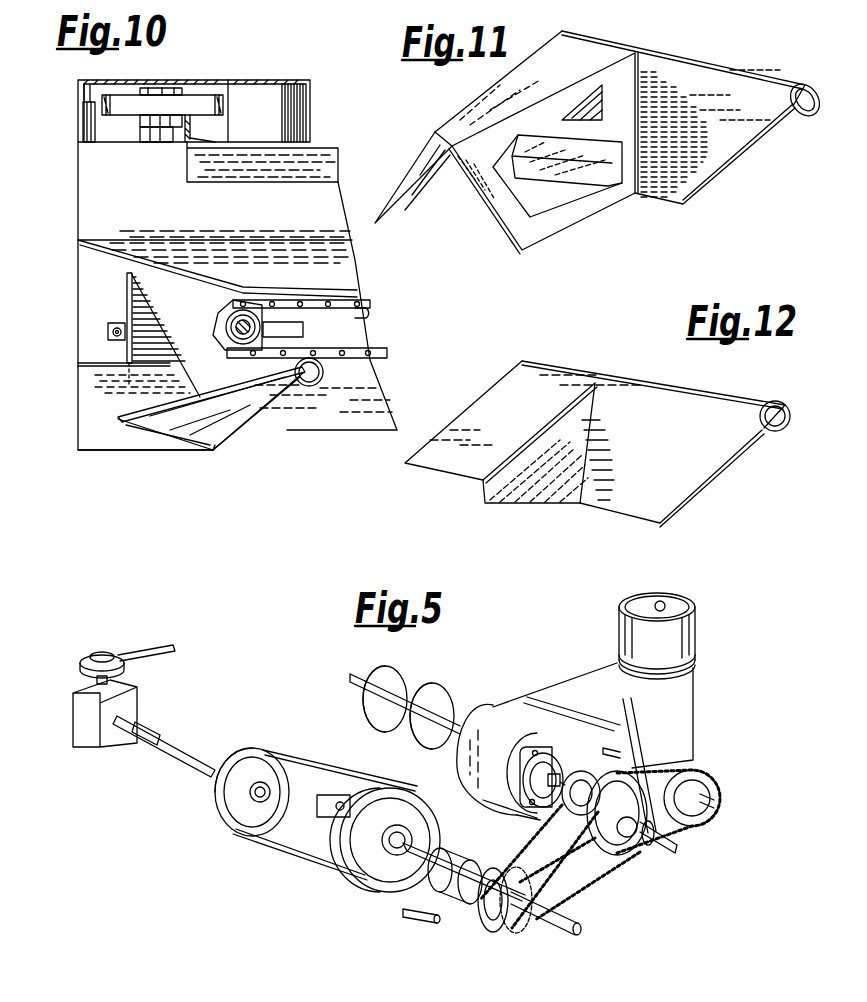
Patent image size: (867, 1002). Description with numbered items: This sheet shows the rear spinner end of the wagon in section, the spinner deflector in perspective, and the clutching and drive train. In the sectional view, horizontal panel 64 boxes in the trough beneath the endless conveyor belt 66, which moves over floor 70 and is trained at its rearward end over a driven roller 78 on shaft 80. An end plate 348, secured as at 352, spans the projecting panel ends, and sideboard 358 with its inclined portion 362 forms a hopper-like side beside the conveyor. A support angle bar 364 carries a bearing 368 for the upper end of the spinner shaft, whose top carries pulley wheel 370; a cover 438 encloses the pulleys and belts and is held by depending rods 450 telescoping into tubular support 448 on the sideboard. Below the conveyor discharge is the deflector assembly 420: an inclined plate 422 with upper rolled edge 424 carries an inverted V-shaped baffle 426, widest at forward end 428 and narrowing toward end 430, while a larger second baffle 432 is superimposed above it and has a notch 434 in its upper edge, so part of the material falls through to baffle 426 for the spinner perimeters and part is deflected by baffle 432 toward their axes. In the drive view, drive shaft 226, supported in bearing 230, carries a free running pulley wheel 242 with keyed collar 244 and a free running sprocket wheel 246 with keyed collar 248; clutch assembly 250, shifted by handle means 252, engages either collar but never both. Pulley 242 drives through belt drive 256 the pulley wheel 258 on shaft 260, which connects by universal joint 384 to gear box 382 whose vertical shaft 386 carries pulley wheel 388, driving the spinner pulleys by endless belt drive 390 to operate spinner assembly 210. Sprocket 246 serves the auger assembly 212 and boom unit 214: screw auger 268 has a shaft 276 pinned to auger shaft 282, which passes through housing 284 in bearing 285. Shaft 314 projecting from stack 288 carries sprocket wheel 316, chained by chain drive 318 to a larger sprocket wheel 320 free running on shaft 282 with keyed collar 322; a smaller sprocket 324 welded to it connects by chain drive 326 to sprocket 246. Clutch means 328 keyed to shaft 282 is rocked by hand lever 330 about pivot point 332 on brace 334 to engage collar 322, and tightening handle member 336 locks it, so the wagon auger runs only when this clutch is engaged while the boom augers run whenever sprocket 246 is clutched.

In FIG. 10, the sideboard 358 is at (135, 199).
In FIG. 10, the inclined portion 362 is at (198, 170).
In FIG. 10, the support angle bar 364 is at (210, 128).
In FIG. 10, the bearing 368 is at (142, 135).
In FIG. 10, the pulley wheel 370 is at (188, 95).
In FIG. 10, the cover 438 is at (262, 68).
In FIG. 10, the tubular support 448 is at (83, 122).
In FIG. 10, the depending spaced rods 450 is at (84, 90).
In FIG. 10, the endless conveyor belt 66 is at (363, 294).
In FIG. 10, the floor 70 is at (372, 314).
In FIG. 10, the driven roller 78 is at (225, 342).
In FIG. 10, the shaft 80 is at (226, 329).
In FIG. 10, the end plate 348 is at (127, 295).
In FIG. 10, the securing point 352 is at (108, 332).
In FIG. 10, the horizontal panel 64 is at (360, 425).
In FIG. 10, the deflector assembly 420 is at (170, 458).
In FIG. 11, the deflector assembly 420 is at (712, 192).
In FIG. 12, the deflector assembly 420 is at (595, 420).
In FIG. 10, the inclined plate 422 is at (240, 455).
In FIG. 11, the inclined plate 422 is at (668, 200).
In FIG. 12, the inclined plate 422 is at (690, 478).
In FIG. 10, the upper rolled edge 424 is at (307, 386).
In FIG. 11, the upper rolled edge 424 is at (803, 118).
In FIG. 12, the upper rolled edge 424 is at (776, 432).
In FIG. 10, the inverted V-shaped baffle 426 is at (220, 455).
In FIG. 11, the inverted V-shaped baffle 426 is at (560, 175).
In FIG. 12, the inverted V-shaped baffle 426 is at (562, 505).
In FIG. 12, the forward end 428 is at (482, 503).
In FIG. 12, the end 430 is at (593, 384).
In FIG. 10, the second baffle 432 is at (95, 450).
In FIG. 11, the second baffle 432 is at (545, 237).
In FIG. 11, the opening or notch 434 is at (557, 112).
In FIG. 5, the spinner assembly 210 is at (72, 648).
In FIG. 5, the auger assembly 212 is at (418, 672).
In FIG. 5, the boom assembly 214 is at (706, 606).
In FIG. 5, the drive shaft 226 is at (572, 937).
In FIG. 5, the bearing 230 is at (335, 796).
In FIG. 5, the pulley wheel 242 is at (370, 890).
In FIG. 5, the keyed collar 244 is at (395, 890).
In FIG. 5, the sprocket wheel 246 is at (518, 935).
In FIG. 5, the keyed collar 248 is at (488, 932).
In FIG. 5, the clutch assembly 250 is at (460, 903).
In FIG. 5, the handle means 252 is at (418, 924).
In FIG. 5, the belt drive 256 is at (280, 842).
In FIG. 5, the pulley wheel 258 is at (262, 757).
In FIG. 5, the shaft 260 is at (172, 752).
In FIG. 5, the screw auger 268 is at (395, 675).
In FIG. 5, the shaft 276 is at (352, 676).
In FIG. 5, the auger shaft 282 is at (677, 849).
In FIG. 5, the housing 284 is at (495, 708).
In FIG. 5, the bearing 285 is at (553, 760).
In FIG. 5, the stack 288 is at (695, 636).
In FIG. 5, the shaft 314 is at (716, 803).
In FIG. 5, the sprocket wheel 316 is at (715, 782).
In FIG. 5, the chain drive 318 is at (706, 772).
In FIG. 5, the larger sprocket wheel 320 is at (627, 840).
In FIG. 5, the keyed collar 322 is at (605, 848).
In FIG. 5, the smaller sprocket 324 is at (562, 815).
In FIG. 5, the chain drive 326 is at (555, 898).
In FIG. 5, the clutch means 328 is at (652, 845).
In FIG. 5, the hand lever 330 is at (623, 707).
In FIG. 5, the pivot point 332 is at (638, 723).
In FIG. 5, the brace 334 is at (555, 690).
In FIG. 5, the tightening handle member 336 is at (603, 751).
In FIG. 5, the gear box 382 is at (88, 747).
In FIG. 5, the universal joint 384 is at (150, 727).
In FIG. 5, the vertical shaft 386 is at (98, 682).
In FIG. 5, the pulley wheel 388 is at (80, 663).
In FIG. 5, the endless belt drive 390 is at (172, 650).